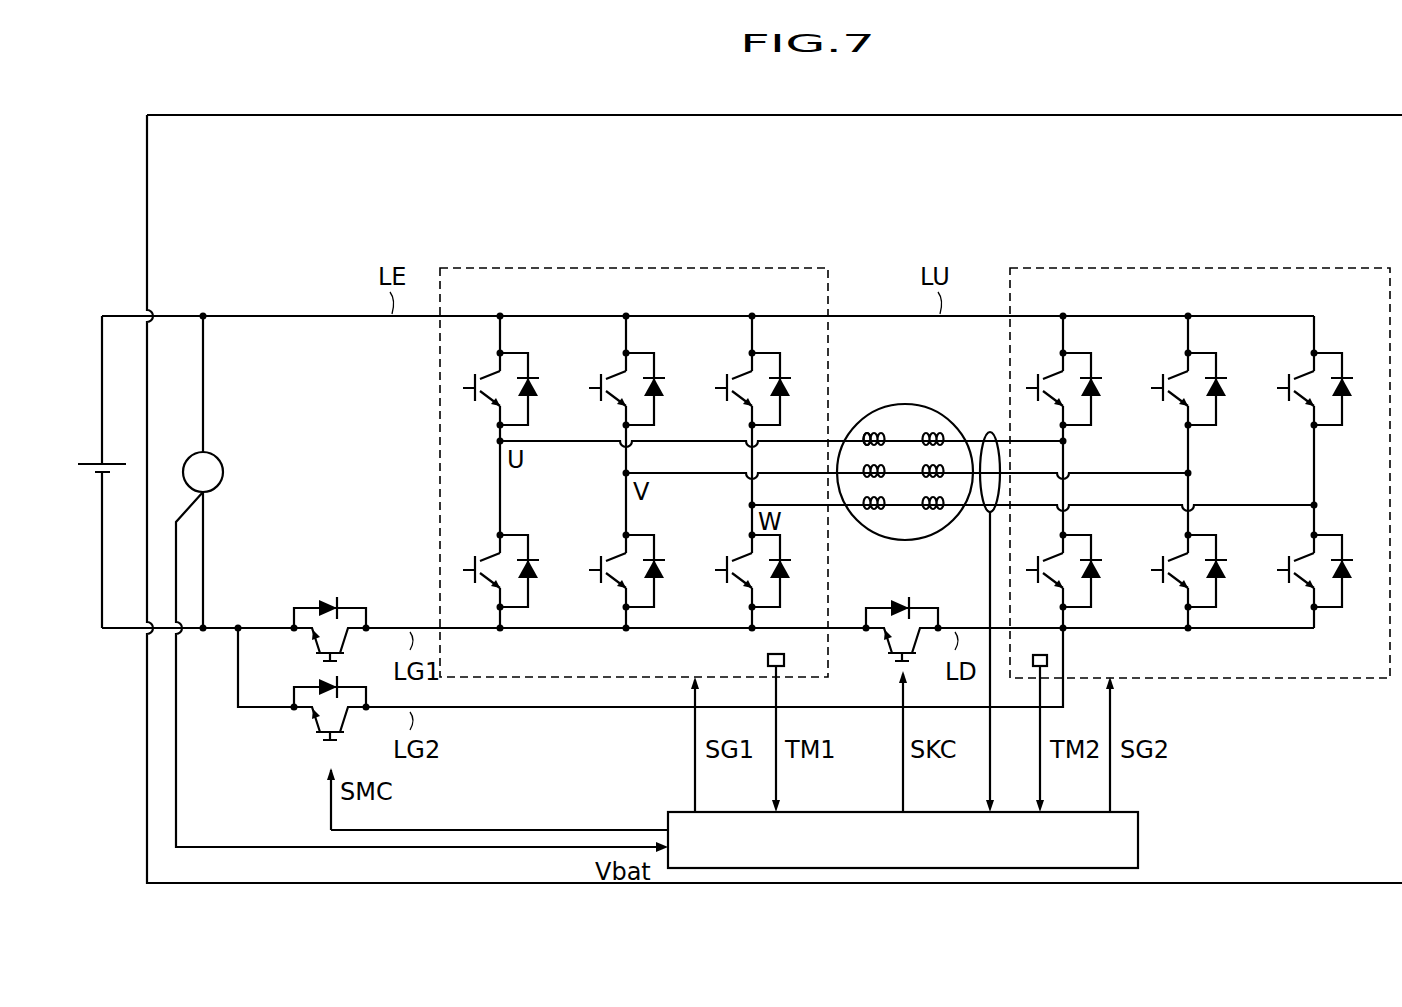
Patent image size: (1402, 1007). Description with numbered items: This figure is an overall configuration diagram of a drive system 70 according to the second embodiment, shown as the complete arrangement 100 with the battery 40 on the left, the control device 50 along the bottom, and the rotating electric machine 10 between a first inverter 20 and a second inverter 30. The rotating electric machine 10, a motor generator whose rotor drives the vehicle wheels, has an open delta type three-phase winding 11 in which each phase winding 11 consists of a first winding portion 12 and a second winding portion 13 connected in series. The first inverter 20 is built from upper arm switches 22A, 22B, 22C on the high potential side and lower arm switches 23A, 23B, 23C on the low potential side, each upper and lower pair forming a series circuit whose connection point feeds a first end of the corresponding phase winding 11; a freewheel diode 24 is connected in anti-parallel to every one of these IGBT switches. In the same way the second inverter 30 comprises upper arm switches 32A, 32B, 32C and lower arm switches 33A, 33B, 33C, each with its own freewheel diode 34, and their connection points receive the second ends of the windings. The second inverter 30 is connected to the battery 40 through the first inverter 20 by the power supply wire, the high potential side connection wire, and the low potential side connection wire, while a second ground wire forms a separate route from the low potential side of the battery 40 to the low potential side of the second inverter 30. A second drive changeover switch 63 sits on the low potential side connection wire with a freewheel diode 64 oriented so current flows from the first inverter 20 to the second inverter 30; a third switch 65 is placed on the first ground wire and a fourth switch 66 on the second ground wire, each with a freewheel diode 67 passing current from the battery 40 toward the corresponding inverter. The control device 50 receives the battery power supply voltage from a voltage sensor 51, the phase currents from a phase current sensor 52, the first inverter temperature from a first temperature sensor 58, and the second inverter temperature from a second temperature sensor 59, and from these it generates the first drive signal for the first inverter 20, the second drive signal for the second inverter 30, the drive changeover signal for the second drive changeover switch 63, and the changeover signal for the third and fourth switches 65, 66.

The power supply system 100 is at (774, 466).
The drive system 70 is at (1187, 114).
The first inverter 20 is at (768, 266).
The second inverter 30 is at (1330, 266).
The battery 40 is at (92, 462).
The voltage sensor 51 is at (218, 454).
The upper arm switch 22A is at (478, 365).
The upper arm switch 22B is at (604, 365).
The upper arm switch 22C is at (730, 365).
The lower arm switch 23A is at (478, 547).
The lower arm switch 23B is at (604, 547).
The lower arm switch 23C is at (730, 547).
The freewheel diode 24 is at (540, 391).
The upper arm switch 32A is at (1041, 365).
The upper arm switch 32B is at (1166, 365).
The upper arm switch 32C is at (1292, 365).
The lower arm switch 33A is at (1041, 547).
The lower arm switch 33B is at (1166, 547).
The lower arm switch 33C is at (1292, 547).
The freewheel diode 34 is at (1103, 391).
The rotating electric machine 10 is at (910, 478).
The winding 11 is at (872, 418).
The first winding portion 12 is at (884, 428).
The second winding portion 13 is at (942, 434).
The phase current sensor 52 is at (986, 512).
The third switch 65 is at (308, 646).
The fourth switch 66 is at (312, 720).
The freewheel diode 67 is at (338, 606).
The second drive changeover switch 63 is at (890, 648).
The freewheel diode 64 is at (908, 604).
The first temperature sensor 58 is at (767, 660).
The second temperature sensor 59 is at (1031, 721).
The control device 50 is at (1138, 838).